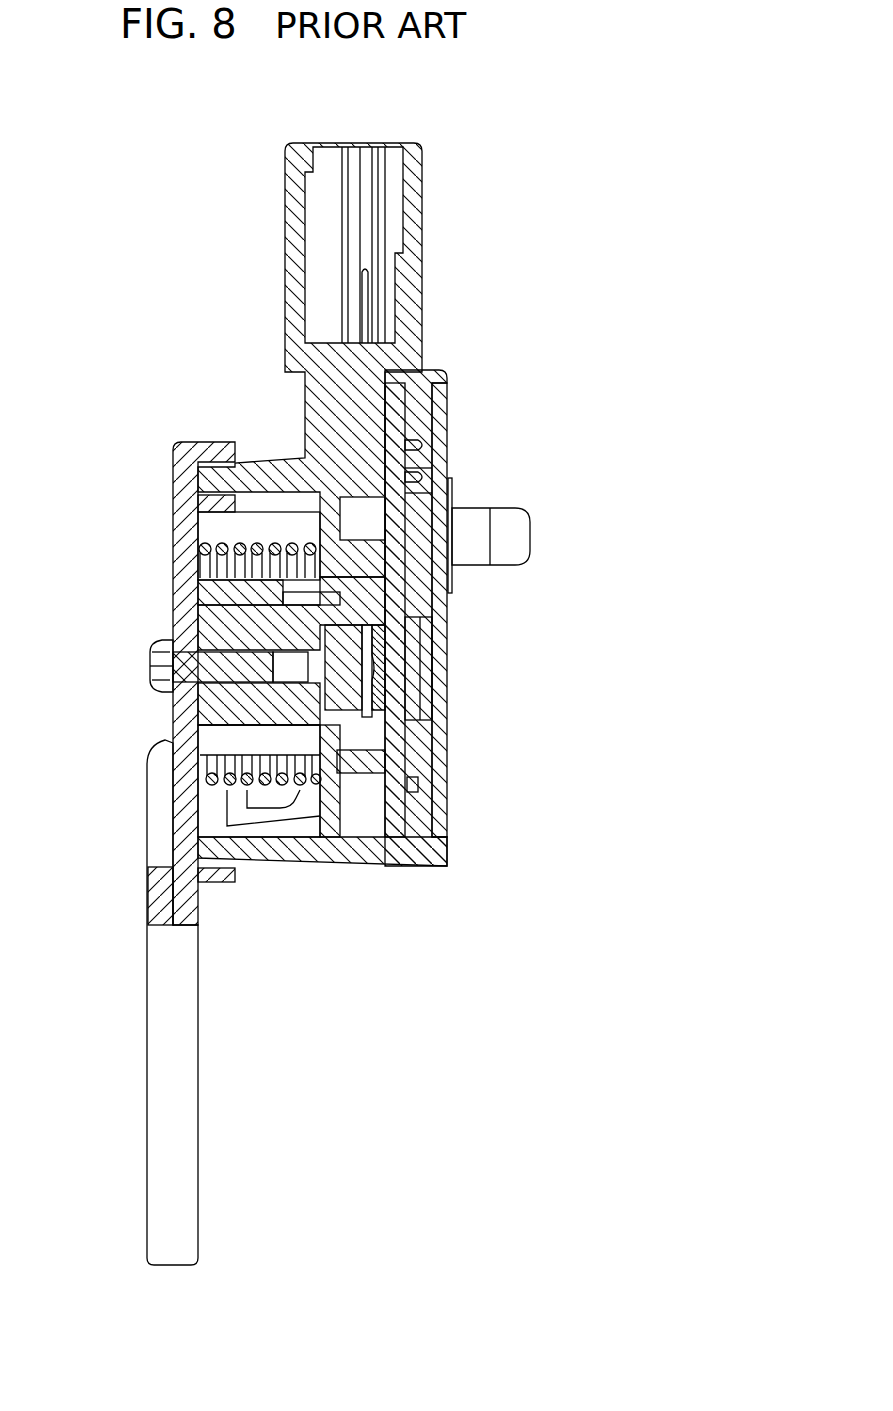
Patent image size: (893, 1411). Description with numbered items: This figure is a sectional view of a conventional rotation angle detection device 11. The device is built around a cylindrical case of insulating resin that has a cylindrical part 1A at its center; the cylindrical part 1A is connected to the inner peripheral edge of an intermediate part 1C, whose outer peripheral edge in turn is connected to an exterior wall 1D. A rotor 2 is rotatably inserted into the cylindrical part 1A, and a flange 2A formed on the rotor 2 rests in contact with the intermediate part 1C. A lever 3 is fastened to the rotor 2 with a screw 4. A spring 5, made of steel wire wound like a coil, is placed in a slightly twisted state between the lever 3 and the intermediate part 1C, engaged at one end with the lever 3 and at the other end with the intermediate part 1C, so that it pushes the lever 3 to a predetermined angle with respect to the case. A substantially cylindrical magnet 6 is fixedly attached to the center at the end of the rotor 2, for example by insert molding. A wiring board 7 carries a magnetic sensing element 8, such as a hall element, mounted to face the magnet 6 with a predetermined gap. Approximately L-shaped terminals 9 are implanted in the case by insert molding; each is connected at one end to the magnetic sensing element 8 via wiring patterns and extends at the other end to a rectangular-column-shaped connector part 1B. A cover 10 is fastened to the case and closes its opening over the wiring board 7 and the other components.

The rotation angle detection device 11 is at (503, 112).
The cylindrical part 1A is at (228, 748).
The connector part 1B is at (415, 210).
The intermediate part 1C is at (333, 523).
The exterior wall 1D is at (283, 848).
The rotor 2 is at (215, 628).
The flange 2A is at (353, 760).
The lever 3 is at (148, 905).
The screw 4 is at (158, 662).
The spring 5 is at (267, 548).
The magnet 6 is at (343, 695).
The wiring board 7 is at (395, 598).
The magnetic sensing element 8 is at (378, 690).
The terminals 9 is at (368, 308).
The cover 10 is at (445, 452).